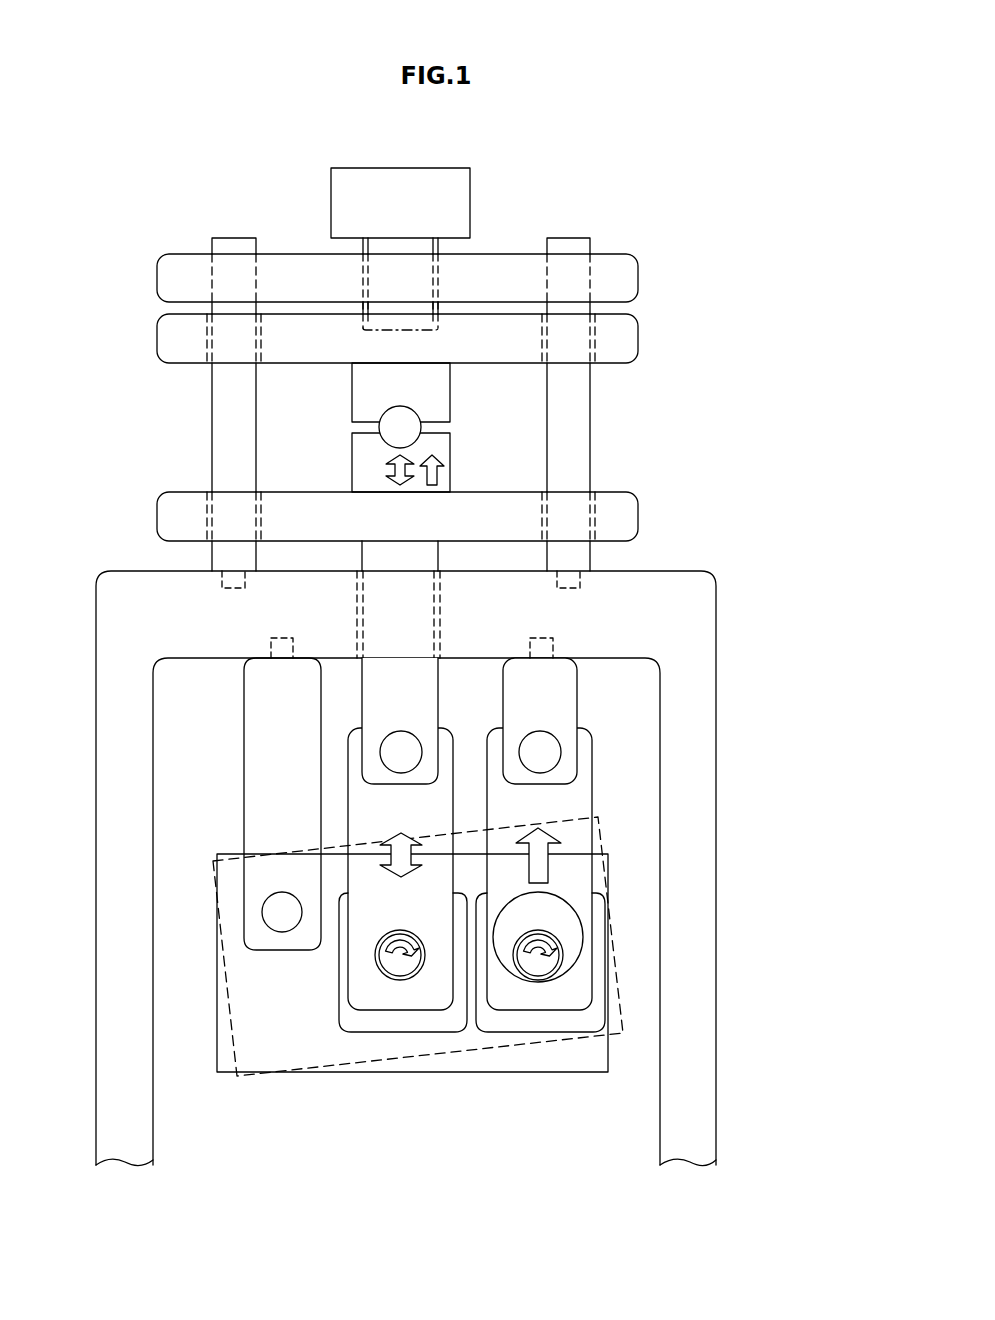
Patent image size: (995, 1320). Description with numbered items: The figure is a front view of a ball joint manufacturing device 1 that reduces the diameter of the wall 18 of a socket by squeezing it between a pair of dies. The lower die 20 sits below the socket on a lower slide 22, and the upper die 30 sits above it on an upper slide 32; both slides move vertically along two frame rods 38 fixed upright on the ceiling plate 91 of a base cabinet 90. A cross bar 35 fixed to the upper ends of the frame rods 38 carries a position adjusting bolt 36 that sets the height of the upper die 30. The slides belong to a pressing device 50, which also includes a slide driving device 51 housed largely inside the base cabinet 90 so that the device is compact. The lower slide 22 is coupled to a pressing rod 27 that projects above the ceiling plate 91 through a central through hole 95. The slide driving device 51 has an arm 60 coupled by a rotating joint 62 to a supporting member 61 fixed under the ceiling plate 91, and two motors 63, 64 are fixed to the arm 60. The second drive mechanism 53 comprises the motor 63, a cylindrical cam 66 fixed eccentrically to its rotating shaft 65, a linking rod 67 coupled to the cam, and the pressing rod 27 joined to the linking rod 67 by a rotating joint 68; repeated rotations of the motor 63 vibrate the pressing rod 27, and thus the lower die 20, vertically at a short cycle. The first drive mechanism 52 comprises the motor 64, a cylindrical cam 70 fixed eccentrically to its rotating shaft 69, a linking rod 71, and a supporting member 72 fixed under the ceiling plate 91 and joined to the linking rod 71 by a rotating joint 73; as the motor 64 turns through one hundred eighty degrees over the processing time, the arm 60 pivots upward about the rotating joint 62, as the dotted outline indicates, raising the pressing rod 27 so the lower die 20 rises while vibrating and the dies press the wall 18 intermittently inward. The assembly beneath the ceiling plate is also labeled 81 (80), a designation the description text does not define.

The ball joint manufacturing device 1 is at (116, 133).
The wall 18 is at (417, 410).
The lower die 20 is at (450, 447).
The lower slide 22 is at (502, 492).
The pressing rod 27 is at (363, 687).
The upper die 30 is at (352, 400).
The upper slide 32 is at (280, 363).
The cross bar 35 is at (638, 277).
The position adjusting bolt 36 is at (400, 168).
The frame rods 38 is at (236, 238).
The pressing device 50 is at (683, 515).
The slide driving device 51 is at (637, 723).
The first drive mechanism 52 is at (592, 783).
The second drive mechanism 53 is at (347, 788).
The arm 60 is at (470, 1052).
The supporting member 61 is at (244, 802).
The rotating joint 62 is at (265, 895).
The motor 63 is at (339, 958).
The motor 64 is at (507, 1032).
The rotating shaft 65 is at (400, 965).
The cylindrical cam 66 is at (390, 928).
The linking rod 67 is at (345, 995).
The rotating joint 68 is at (395, 730).
The rotating shaft 69 is at (537, 965).
The cylindrical cam 70 is at (548, 915).
The linking rod 71 is at (592, 807).
The supporting member 72 is at (580, 708).
The rotating joint 73 is at (538, 731).
The lower unit 80 is at (458, 903).
The lower unit body 81 is at (509, 884).
The base cabinet 90 is at (716, 847).
The ceiling plate 91 is at (272, 571).
The through hole 95 is at (443, 632).